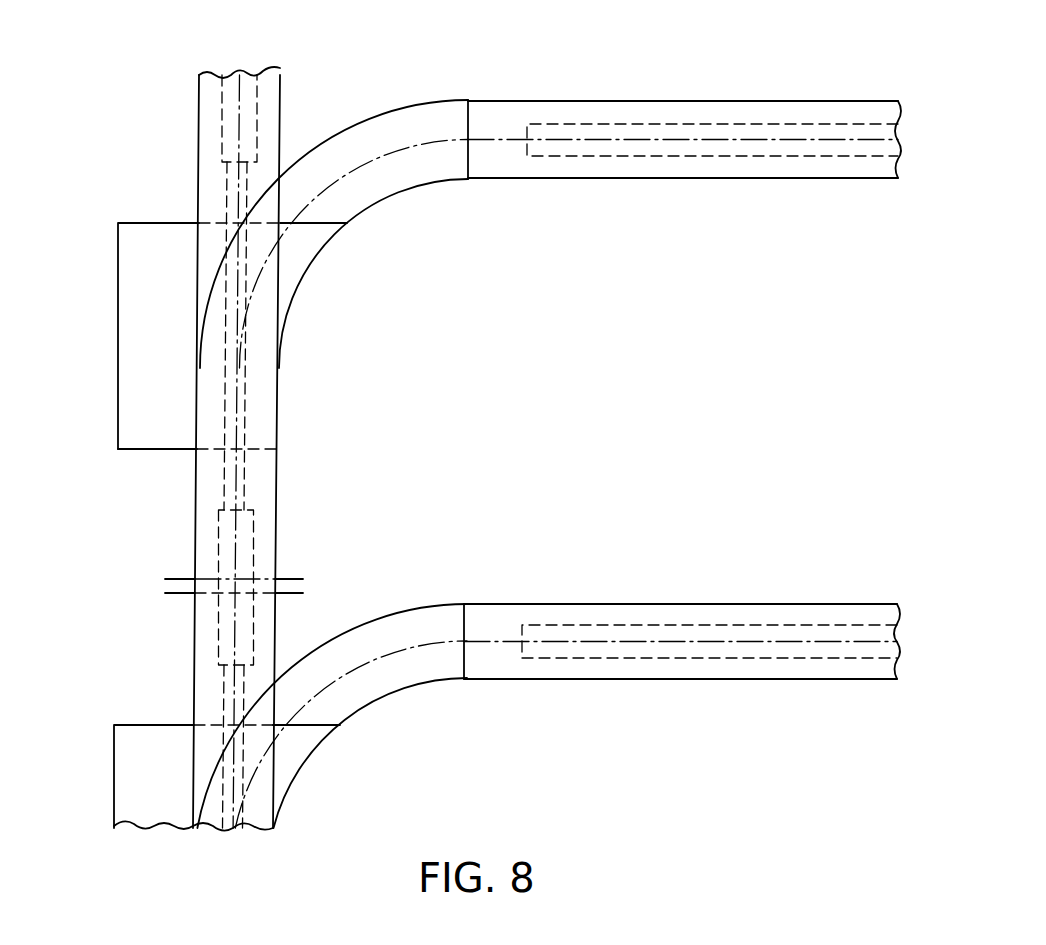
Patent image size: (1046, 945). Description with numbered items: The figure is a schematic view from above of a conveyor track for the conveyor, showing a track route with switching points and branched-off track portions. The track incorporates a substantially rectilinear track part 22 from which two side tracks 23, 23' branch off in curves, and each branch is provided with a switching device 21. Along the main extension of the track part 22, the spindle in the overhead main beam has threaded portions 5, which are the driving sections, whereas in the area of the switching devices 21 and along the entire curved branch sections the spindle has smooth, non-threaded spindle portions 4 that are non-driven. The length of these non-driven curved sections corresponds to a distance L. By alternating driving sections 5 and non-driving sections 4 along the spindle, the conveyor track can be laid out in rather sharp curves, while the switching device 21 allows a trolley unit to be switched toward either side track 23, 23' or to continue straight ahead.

The non-threaded spindle portion 4 is at (371, 150).
The threaded portion 5 is at (228, 119).
The switching device 21 is at (130, 343).
The rectilinear track part 22 is at (292, 522).
The branched off side track 23 is at (682, 596).
The branched off side track 23' is at (684, 98).